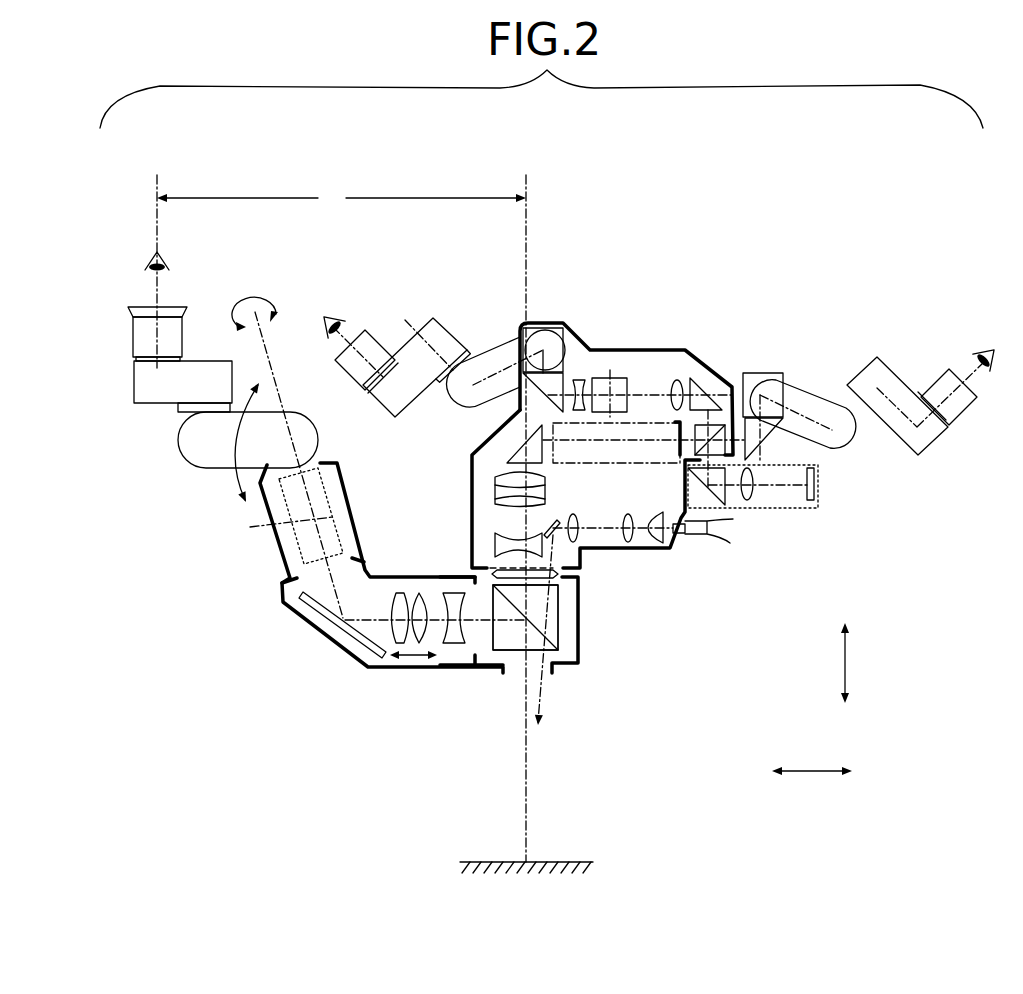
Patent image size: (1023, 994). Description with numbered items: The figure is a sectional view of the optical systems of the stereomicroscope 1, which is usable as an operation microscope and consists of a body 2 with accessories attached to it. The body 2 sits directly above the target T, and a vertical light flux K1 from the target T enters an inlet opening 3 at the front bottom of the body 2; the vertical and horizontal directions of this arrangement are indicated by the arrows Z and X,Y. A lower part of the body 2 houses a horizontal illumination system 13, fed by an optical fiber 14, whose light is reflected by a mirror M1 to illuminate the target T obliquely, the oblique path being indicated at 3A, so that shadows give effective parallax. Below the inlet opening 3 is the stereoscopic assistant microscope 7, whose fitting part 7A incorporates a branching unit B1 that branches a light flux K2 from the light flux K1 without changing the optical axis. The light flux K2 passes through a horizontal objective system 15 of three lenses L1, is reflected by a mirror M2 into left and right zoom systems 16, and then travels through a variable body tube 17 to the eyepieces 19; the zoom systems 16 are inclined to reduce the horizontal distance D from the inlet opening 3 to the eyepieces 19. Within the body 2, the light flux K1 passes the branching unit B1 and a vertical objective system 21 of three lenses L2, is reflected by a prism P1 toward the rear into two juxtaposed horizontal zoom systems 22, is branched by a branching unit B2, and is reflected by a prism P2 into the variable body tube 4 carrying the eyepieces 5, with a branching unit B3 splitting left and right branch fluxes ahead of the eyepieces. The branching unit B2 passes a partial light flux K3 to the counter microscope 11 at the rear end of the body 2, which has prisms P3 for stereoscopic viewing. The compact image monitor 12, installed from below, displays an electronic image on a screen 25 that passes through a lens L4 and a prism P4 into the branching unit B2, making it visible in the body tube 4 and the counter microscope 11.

The stereomicroscope 1 is at (602, 393).
The body 2 is at (634, 349).
The inlet opening 3 is at (528, 585).
The reflected light path 3A is at (515, 673).
The variable body tube 4 is at (493, 353).
The eyepieces 5 is at (386, 340).
The stereoscopic assistant microscope 7 is at (386, 644).
The fitting part 7A is at (578, 607).
The counter microscope 11 is at (778, 375).
The compact image monitor 12 is at (810, 458).
The horizontal illumination system 13 is at (655, 545).
The optical fiber 14 is at (707, 538).
The horizontal objective system 15 is at (447, 668).
The zoom systems 16 is at (347, 497).
The variable body tube 17 is at (192, 448).
The eyepieces 19 is at (147, 338).
The vertical objective system 21 is at (474, 502).
The zoom systems 22 is at (657, 422).
The screen 25 is at (818, 495).
The branching unit B1 is at (558, 633).
The branching unit B2 is at (718, 424).
The branching unit B3 is at (603, 377).
The horizontal distance D is at (341, 271).
The light flux K1 is at (528, 767).
The light flux K2 is at (282, 457).
The partial light flux K3 is at (910, 427).
The lenses L1 is at (450, 593).
The lenses L2 is at (497, 478).
The lens L4 is at (753, 492).
The mirror M1 is at (557, 518).
The mirror M2 is at (345, 649).
The prism P1 is at (513, 452).
The prism P2 is at (708, 378).
The prisms P3 is at (775, 417).
The prism P4 is at (725, 493).
The target T is at (570, 861).
The Z direction Z is at (854, 663).
The X,Y direction X,Y is at (835, 774).